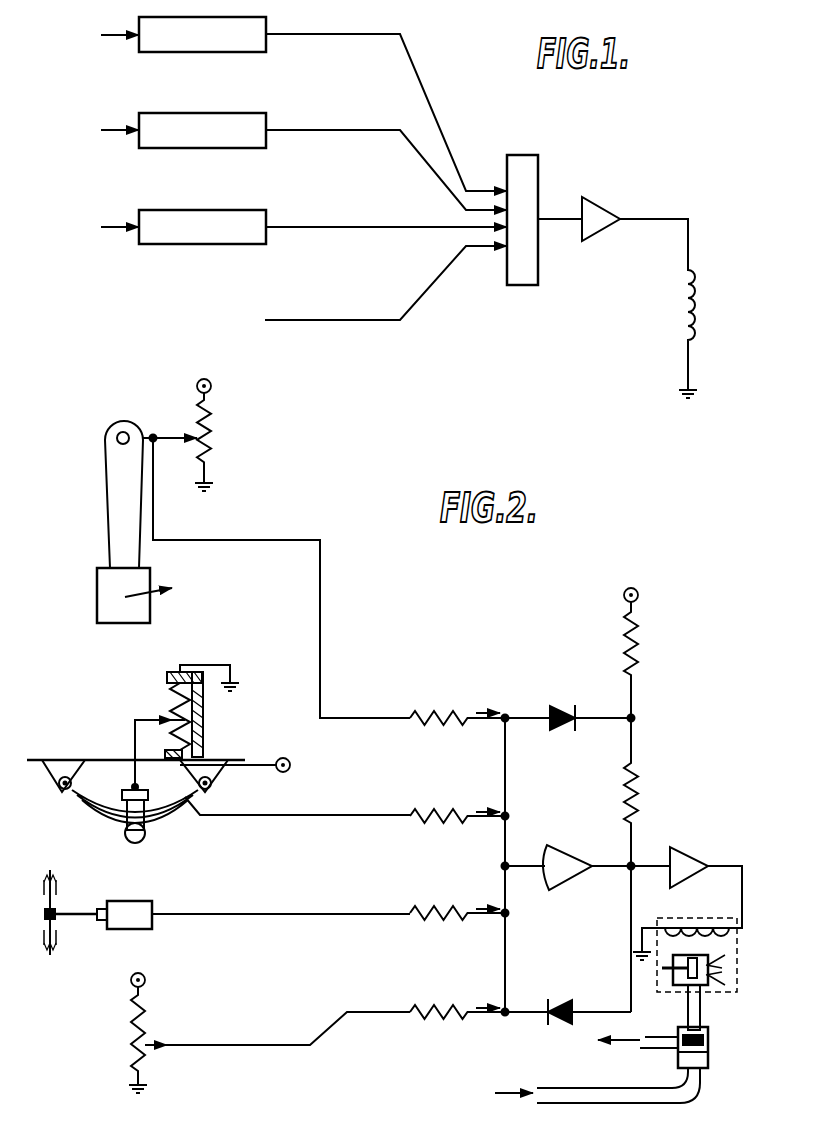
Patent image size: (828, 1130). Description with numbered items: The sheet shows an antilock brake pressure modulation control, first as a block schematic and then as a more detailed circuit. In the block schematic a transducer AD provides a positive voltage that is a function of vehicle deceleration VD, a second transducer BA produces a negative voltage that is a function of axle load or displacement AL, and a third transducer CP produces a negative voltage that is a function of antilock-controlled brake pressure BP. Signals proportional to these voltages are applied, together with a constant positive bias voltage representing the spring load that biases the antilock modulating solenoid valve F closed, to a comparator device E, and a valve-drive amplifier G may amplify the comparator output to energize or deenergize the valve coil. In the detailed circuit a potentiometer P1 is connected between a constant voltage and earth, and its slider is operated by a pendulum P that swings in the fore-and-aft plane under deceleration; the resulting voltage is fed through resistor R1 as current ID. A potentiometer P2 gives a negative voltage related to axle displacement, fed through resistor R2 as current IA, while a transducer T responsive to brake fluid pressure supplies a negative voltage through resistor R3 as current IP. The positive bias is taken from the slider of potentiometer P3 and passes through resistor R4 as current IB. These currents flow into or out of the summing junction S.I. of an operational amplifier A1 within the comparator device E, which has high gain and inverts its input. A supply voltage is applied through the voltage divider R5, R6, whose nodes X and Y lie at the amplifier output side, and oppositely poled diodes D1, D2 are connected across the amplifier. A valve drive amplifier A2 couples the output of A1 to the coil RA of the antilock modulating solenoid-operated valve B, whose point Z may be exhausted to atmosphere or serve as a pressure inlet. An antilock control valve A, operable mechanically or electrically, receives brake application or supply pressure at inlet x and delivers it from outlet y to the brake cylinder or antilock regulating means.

In FIG. 1, the vehicle deceleration VD is at (104, 36).
In FIG. 1, the axle load or displacement AL is at (104, 131).
In FIG. 1, the antilock-controlled brake pressure BP is at (104, 228).
In FIG. 1, the transducer AD is at (266, 17).
In FIG. 1, the second transducer BA is at (262, 113).
In FIG. 1, the third transducer CP is at (262, 210).
In FIG. 1, the comparator device E is at (518, 155).
In FIG. 2, the comparator device E is at (580, 808).
In FIG. 1, the valve-drive amplifier G is at (597, 234).
In FIG. 1, the antilock modulating solenoid valve F is at (682, 311).
In FIG. 2, the pendulum P is at (118, 536).
In FIG. 2, the potentiometer P1 is at (234, 437).
In FIG. 2, the potentiometer P2 is at (203, 718).
In FIG. 2, the potentiometer P3 is at (102, 1043).
In FIG. 2, the transducer T is at (133, 908).
In FIG. 2, the resistor R1 is at (440, 711).
In FIG. 2, the resistor R2 is at (440, 809).
In FIG. 2, the resistor R3 is at (440, 906).
In FIG. 2, the resistor R4 is at (440, 1005).
In FIG. 2, the voltage divider resistor R5 is at (638, 655).
In FIG. 2, the voltage divider resistor R6 is at (638, 808).
In FIG. 2, the deceleration current ID is at (478, 712).
In FIG. 2, the axle load current IA is at (478, 812).
In FIG. 2, the brake pressure current IP is at (478, 910).
In FIG. 2, the bias current IB is at (478, 1009).
In FIG. 2, the summing junction S.I. is at (524, 865).
In FIG. 2, the diode D1 is at (558, 705).
In FIG. 2, the diode D2 is at (556, 1000).
In FIG. 2, the voltage divider node X is at (643, 719).
In FIG. 2, the amplifier output node Y is at (641, 927).
In FIG. 2, the operational amplifier A1 is at (567, 870).
In FIG. 2, the valve drive amplifier A2 is at (688, 872).
In FIG. 2, the coil RA is at (700, 922).
In FIG. 2, the antilock modulating solenoid-operated valve B is at (668, 978).
In FIG. 2, the valve point Z is at (719, 970).
In FIG. 2, the antilock control valve A is at (706, 1060).
In FIG. 2, the inlet x is at (540, 1088).
In FIG. 2, the outlet y is at (640, 1035).